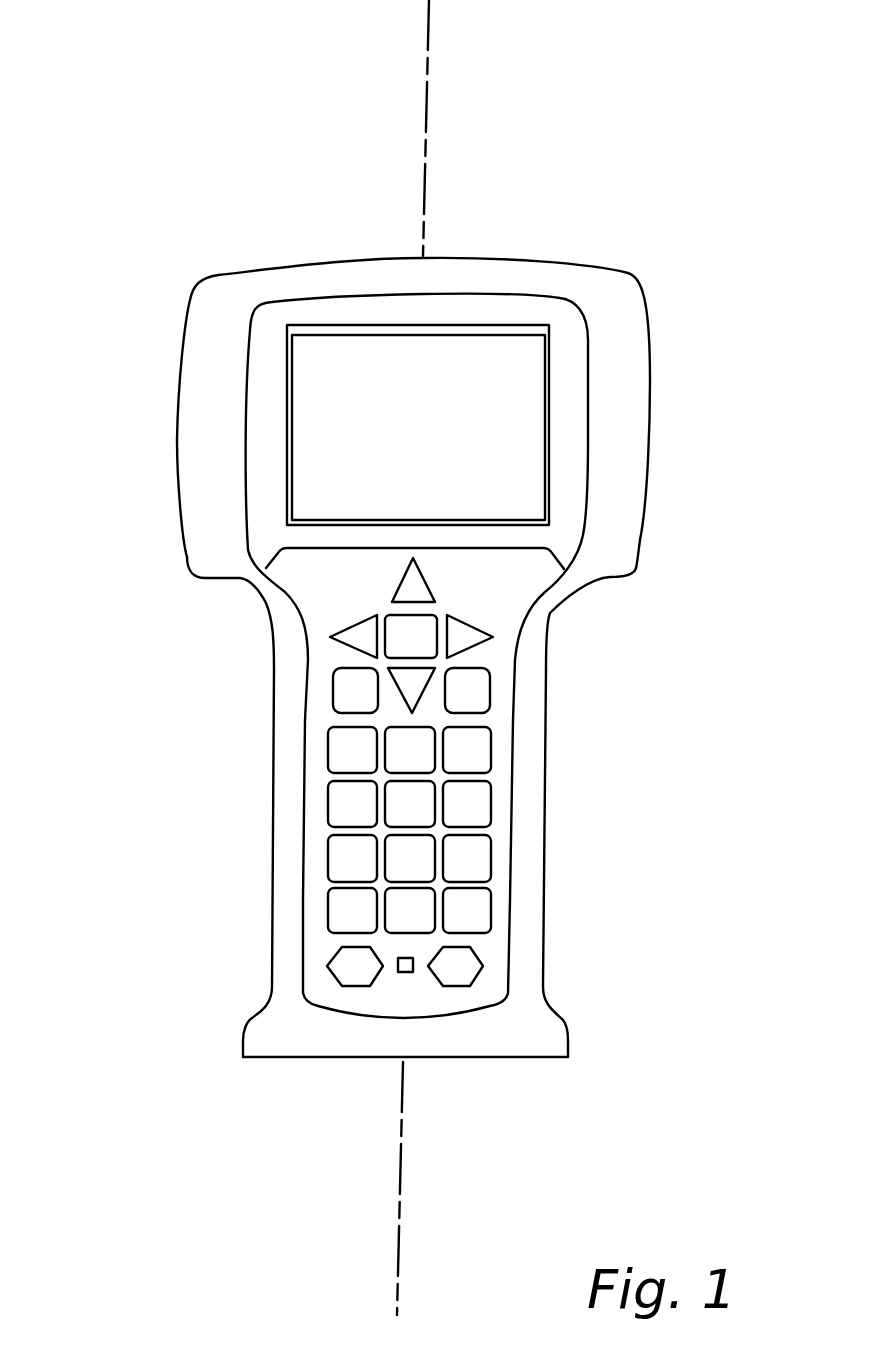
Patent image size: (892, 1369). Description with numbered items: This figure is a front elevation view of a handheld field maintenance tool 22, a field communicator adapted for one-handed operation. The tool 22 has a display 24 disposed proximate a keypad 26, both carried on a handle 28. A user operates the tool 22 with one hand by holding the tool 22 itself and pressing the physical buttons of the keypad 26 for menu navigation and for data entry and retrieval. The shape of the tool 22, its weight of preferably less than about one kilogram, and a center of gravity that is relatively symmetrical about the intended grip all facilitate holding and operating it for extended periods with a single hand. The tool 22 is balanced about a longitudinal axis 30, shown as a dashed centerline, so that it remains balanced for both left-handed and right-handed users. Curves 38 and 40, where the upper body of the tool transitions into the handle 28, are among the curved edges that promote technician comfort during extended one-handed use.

The handheld field maintenance tool 22 is at (684, 435).
The display 24 is at (287, 422).
The keypad 26 is at (490, 712).
The handle 28 is at (543, 880).
The longitudinal axis 30 is at (425, 227).
The curve 38 is at (550, 615).
The curve 40 is at (267, 600).